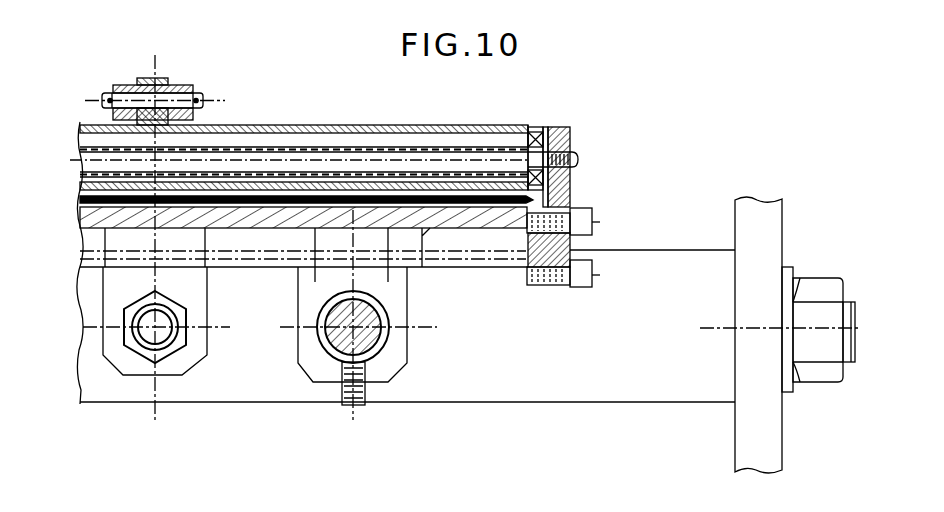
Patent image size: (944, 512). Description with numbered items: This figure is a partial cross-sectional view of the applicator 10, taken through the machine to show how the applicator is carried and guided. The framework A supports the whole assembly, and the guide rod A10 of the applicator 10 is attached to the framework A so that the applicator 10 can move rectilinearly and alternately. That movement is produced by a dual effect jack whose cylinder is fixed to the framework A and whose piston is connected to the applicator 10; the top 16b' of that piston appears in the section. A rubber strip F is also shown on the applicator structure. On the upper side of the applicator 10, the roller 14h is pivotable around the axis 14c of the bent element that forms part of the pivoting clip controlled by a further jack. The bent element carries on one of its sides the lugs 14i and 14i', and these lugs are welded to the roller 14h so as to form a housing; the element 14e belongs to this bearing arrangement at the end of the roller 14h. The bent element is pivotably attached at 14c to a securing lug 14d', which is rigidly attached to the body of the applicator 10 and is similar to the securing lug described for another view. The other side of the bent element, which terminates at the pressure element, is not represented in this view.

The roller 14h is at (365, 127).
The applicator 10 is at (482, 224).
The top of the piston 16b' is at (172, 331).
The guide rod A10 is at (333, 351).
The lug 14i is at (140, 80).
The lug 14i' is at (171, 59).
The bearing pin 14e is at (203, 101).
The rubber strip F is at (510, 200).
The securing lug 14d' is at (571, 183).
The pivot axis 14c is at (577, 158).
The framework A is at (496, 403).